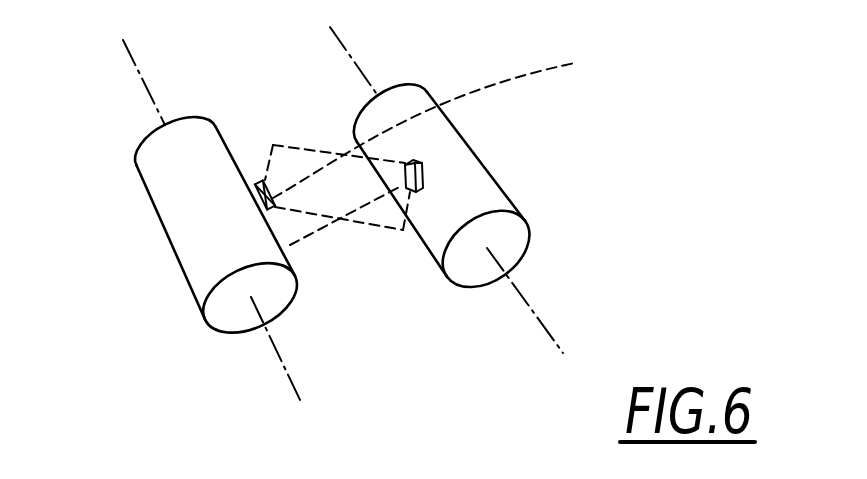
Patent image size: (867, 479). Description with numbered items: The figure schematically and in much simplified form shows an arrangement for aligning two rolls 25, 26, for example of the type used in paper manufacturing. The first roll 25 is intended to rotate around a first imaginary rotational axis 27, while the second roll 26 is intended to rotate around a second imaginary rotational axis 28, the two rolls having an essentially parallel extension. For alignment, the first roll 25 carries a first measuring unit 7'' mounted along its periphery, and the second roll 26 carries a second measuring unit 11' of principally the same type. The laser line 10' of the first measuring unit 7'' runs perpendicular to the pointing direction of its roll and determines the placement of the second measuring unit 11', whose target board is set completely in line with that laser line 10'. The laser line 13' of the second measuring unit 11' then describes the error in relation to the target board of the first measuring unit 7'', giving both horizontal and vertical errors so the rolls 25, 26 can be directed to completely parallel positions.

The first roll 25 is at (462, 148).
The second roll 26 is at (192, 221).
The first imaginary rotational axis 27 is at (540, 313).
The second imaginary rotational axis 28 is at (287, 373).
The laser line of the first measuring unit 10' is at (331, 135).
The laser line of the second measuring unit 13' is at (454, 121).
The second measuring unit 11' is at (312, 293).
The first measuring unit 7'' is at (428, 281).